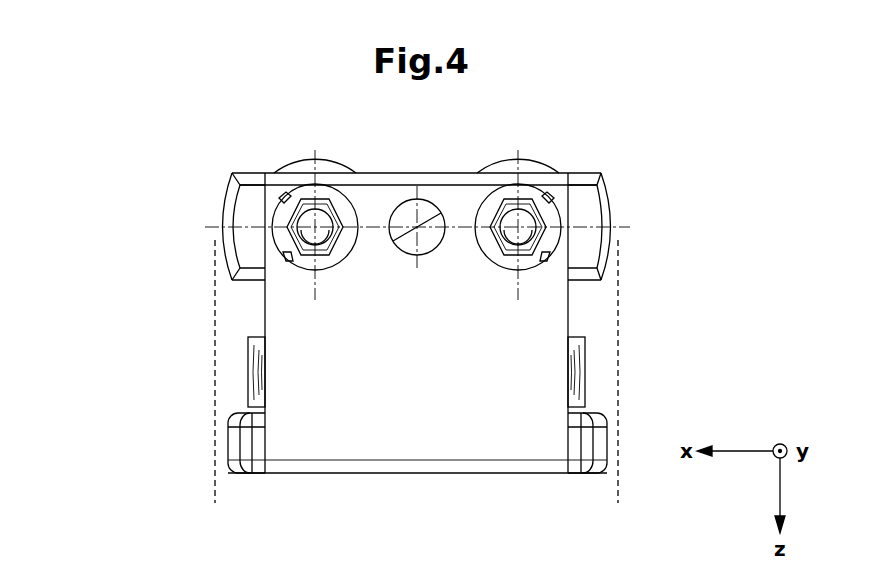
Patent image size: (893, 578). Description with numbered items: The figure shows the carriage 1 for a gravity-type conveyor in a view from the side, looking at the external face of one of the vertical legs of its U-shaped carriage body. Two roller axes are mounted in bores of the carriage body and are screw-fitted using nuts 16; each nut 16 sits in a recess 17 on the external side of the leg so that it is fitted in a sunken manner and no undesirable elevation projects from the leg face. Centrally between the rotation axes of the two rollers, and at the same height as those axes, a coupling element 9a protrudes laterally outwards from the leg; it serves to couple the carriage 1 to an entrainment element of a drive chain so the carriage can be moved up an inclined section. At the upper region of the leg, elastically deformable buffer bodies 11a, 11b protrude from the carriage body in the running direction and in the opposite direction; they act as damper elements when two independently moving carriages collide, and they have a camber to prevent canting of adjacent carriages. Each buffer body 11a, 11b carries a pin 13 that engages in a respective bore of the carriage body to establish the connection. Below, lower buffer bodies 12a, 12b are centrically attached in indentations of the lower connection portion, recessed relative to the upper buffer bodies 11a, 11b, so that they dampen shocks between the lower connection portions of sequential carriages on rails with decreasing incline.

The carriage 1 is at (197, 143).
The coupling element 9a is at (402, 213).
The buffer body 11a is at (595, 209).
The buffer body 11b is at (235, 218).
The lower buffer body 12a is at (588, 446).
The lower buffer body 12b is at (247, 447).
The pin 13 is at (288, 257).
The nut 16 is at (295, 218).
The recess 17 is at (310, 192).